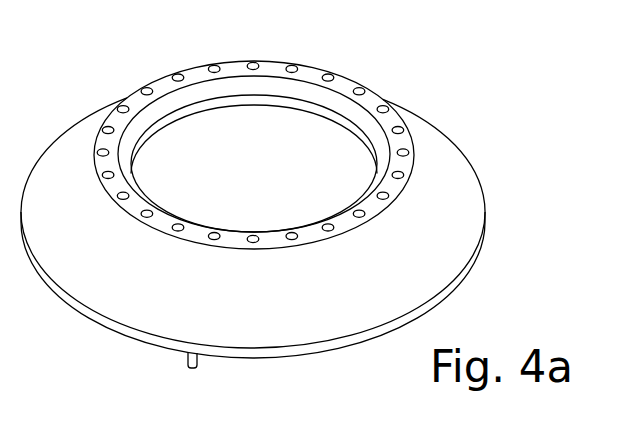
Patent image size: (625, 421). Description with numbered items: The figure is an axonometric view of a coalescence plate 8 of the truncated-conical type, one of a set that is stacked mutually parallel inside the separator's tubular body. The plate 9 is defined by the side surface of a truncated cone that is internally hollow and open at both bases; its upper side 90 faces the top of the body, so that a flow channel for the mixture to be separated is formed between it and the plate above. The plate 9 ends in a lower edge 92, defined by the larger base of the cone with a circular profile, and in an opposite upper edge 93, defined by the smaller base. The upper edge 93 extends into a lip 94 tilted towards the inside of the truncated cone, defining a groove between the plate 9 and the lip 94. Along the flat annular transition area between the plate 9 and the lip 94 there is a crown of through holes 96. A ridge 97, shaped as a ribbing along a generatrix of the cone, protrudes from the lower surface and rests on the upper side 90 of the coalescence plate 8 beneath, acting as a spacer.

The coalescence plate 8 is at (303, 209).
The plate 9 is at (303, 209).
The upper side 90 is at (283, 180).
The lower edge 92 is at (487, 255).
The upper edge 93 is at (256, 135).
The lip 94 is at (162, 105).
The through holes 96 is at (125, 107).
The ridge 97 is at (197, 360).